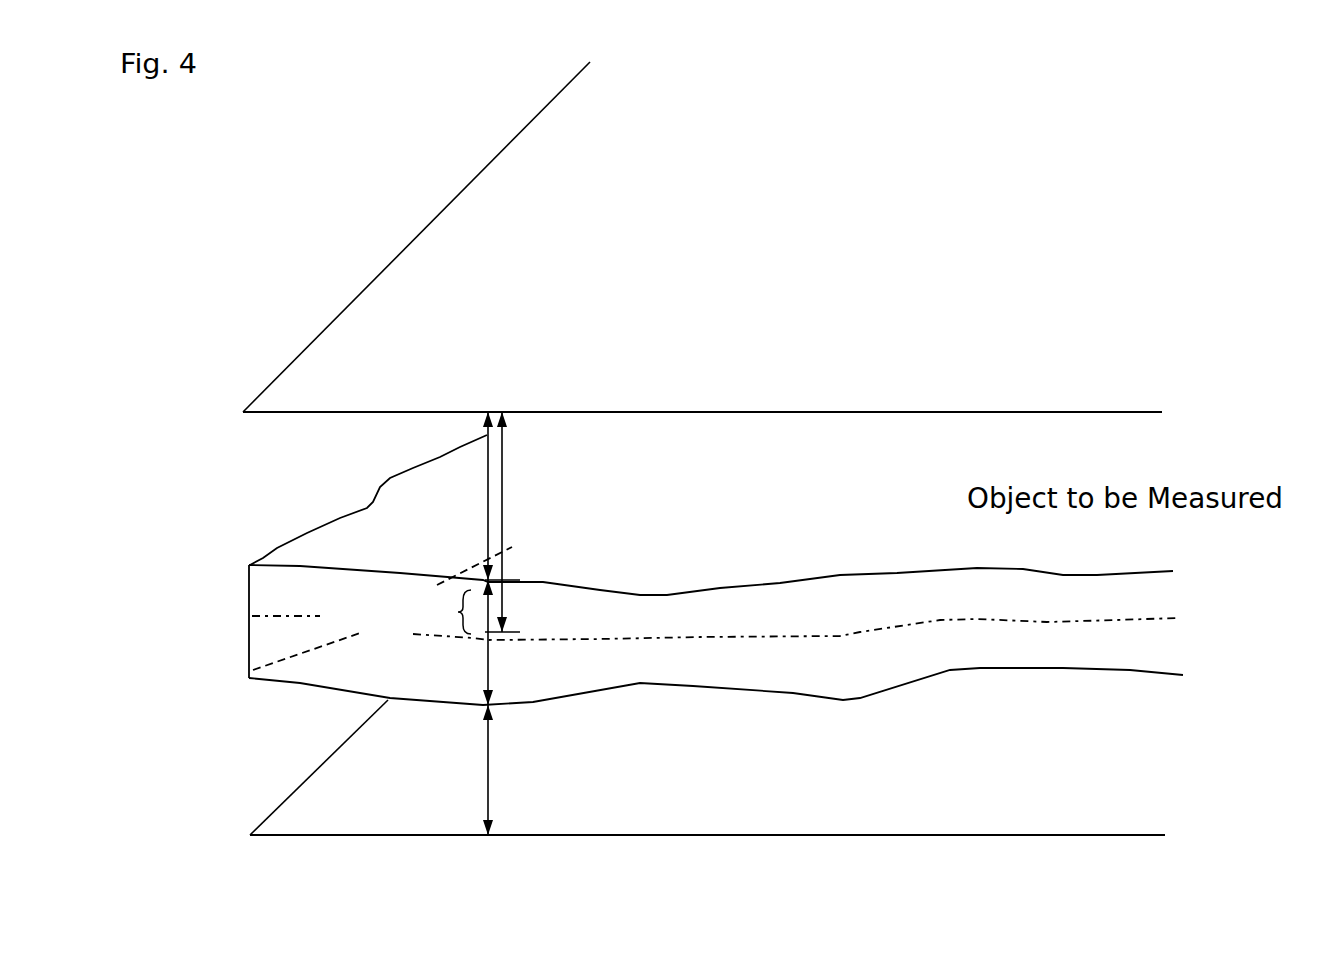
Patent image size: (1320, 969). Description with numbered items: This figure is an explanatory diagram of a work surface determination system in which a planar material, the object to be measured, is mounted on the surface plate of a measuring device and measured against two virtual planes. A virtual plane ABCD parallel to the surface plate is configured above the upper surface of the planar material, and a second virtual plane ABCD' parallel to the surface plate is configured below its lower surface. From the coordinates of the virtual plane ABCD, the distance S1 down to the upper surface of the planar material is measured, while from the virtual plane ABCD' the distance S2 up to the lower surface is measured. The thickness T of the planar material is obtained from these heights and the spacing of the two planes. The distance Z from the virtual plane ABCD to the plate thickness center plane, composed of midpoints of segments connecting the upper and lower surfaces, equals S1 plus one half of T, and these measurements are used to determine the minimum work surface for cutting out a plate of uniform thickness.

The distance S1(m,n) S1 is at (437, 496).
The distance S2(m,n) S2 is at (439, 770).
The thickness T(m,n) T is at (425, 642).
The distance Z(m,n) Z is at (671, 522).
The virtual plane ABCD is at (702, 237).
The virtual plane ABCD' is at (707, 767).